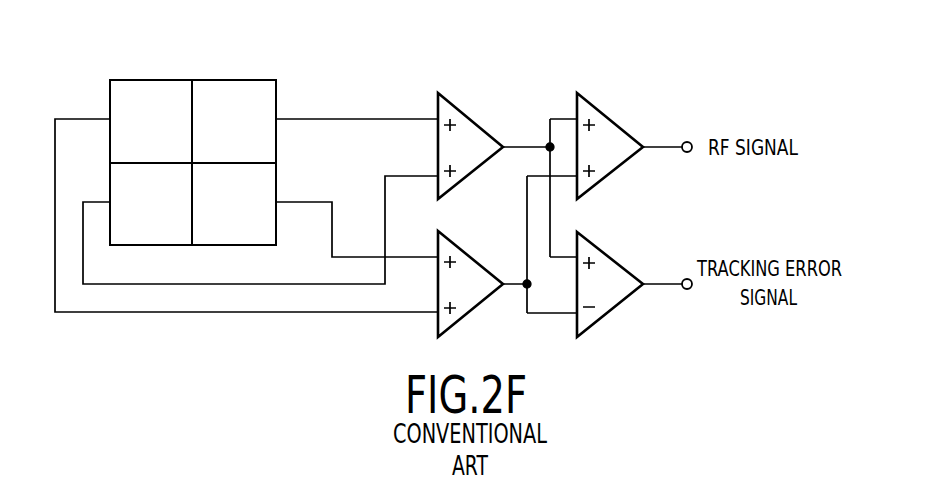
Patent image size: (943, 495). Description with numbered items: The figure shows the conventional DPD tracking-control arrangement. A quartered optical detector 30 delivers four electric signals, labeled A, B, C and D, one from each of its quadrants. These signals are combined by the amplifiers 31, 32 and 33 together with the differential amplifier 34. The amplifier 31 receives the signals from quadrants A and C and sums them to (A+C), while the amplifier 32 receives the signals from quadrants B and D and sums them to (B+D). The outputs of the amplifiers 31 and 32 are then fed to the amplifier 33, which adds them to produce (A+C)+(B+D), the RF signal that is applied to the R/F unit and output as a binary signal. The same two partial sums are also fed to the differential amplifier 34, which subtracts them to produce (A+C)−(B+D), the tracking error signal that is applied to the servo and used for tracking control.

The optical detector 30 is at (268, 80).
The amplifier 31 is at (473, 121).
The amplifier 32 is at (463, 249).
The amplifier 33 is at (618, 127).
The differential amplifier 34 is at (617, 262).